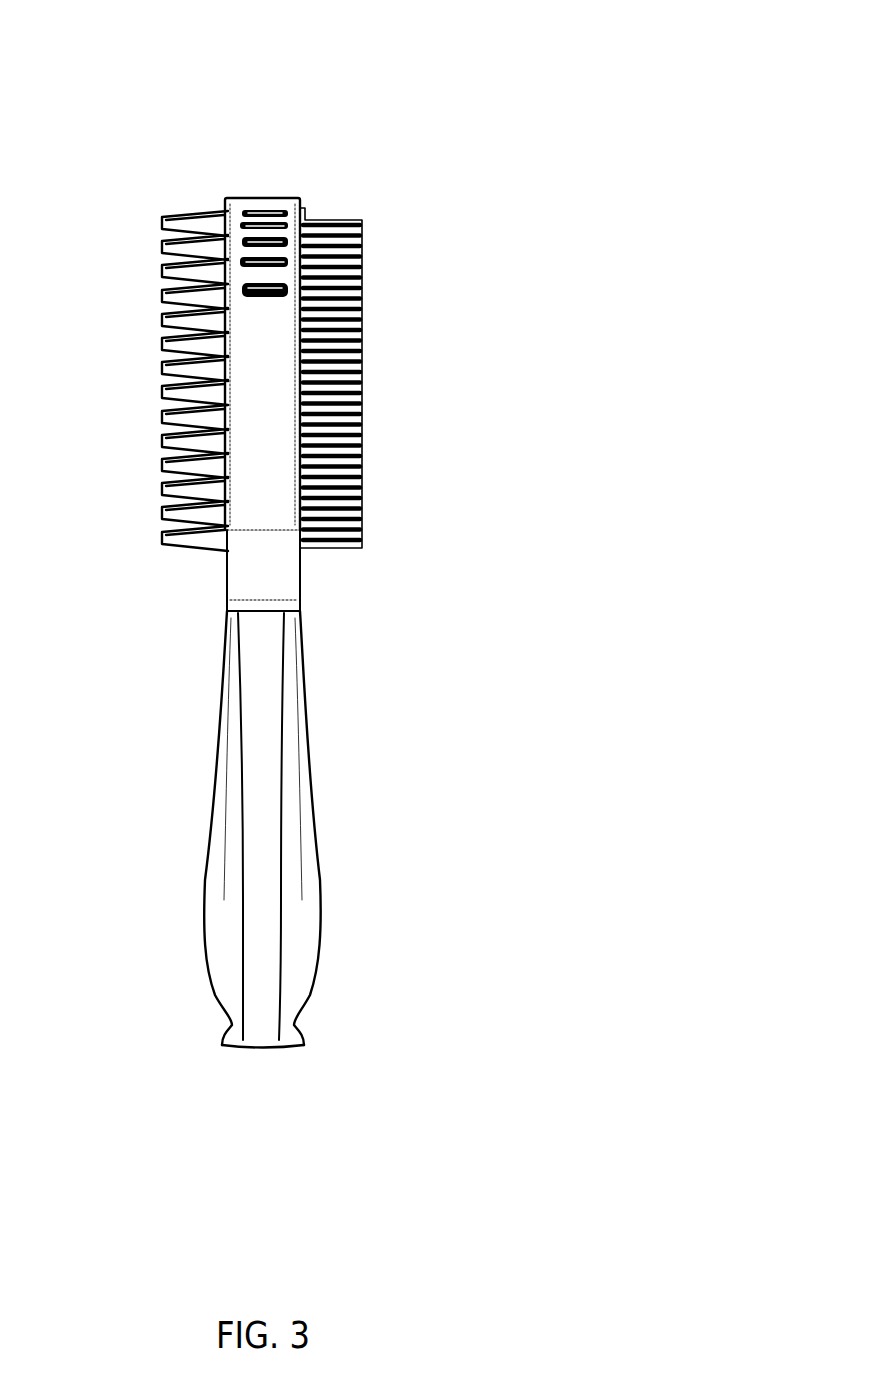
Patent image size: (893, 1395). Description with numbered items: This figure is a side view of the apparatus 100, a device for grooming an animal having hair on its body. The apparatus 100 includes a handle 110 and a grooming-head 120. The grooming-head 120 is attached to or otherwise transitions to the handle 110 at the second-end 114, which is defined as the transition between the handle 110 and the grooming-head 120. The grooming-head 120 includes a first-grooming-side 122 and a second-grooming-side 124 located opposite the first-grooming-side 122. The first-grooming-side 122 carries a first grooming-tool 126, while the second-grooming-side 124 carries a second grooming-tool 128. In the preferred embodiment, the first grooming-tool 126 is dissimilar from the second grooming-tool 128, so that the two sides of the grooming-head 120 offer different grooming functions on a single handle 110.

The apparatus 100 is at (623, 43).
The handle 110 is at (304, 886).
The second-end 114 is at (300, 611).
The grooming-head 120 is at (272, 207).
The first-grooming-side 122 is at (300, 209).
The second-grooming-side 124 is at (228, 206).
The first grooming-tool 126 is at (348, 336).
The second grooming-tool 128 is at (200, 360).